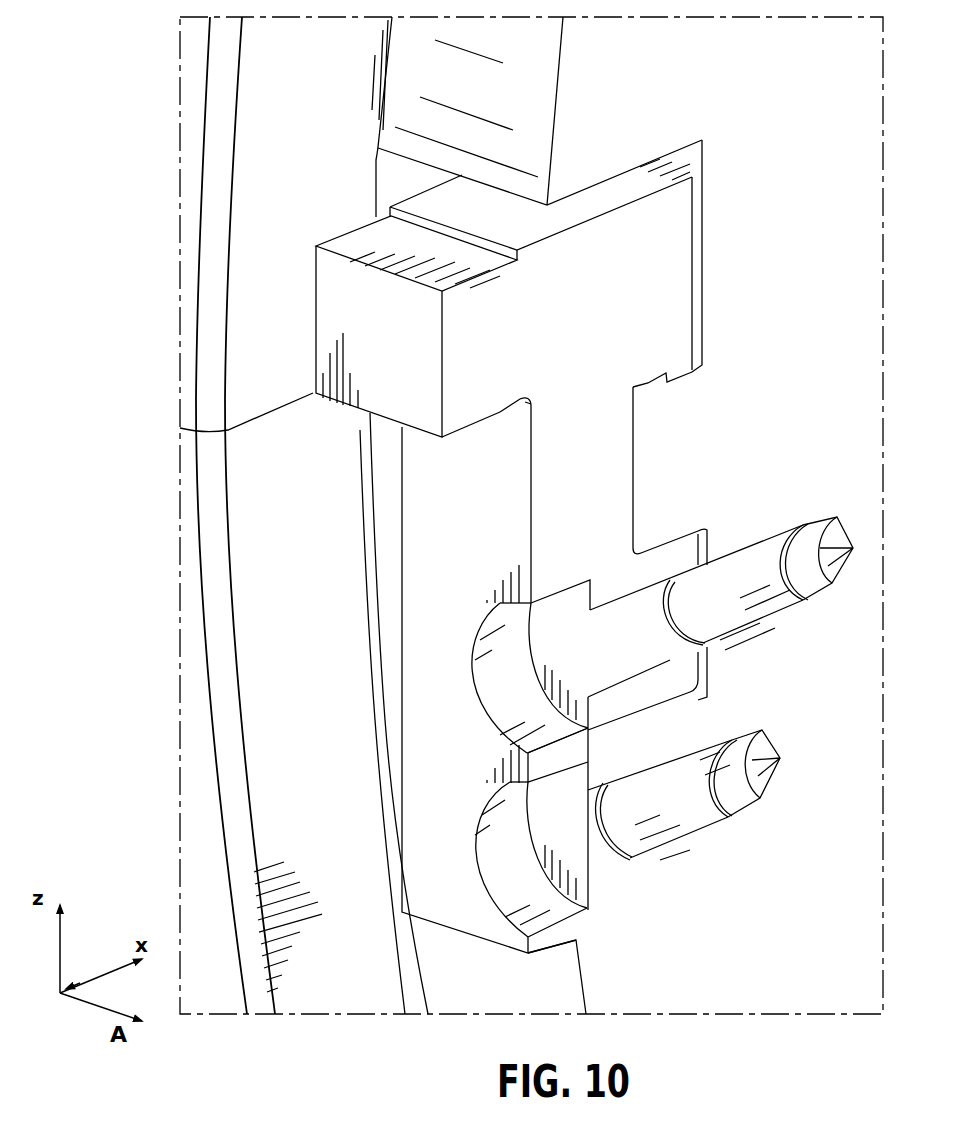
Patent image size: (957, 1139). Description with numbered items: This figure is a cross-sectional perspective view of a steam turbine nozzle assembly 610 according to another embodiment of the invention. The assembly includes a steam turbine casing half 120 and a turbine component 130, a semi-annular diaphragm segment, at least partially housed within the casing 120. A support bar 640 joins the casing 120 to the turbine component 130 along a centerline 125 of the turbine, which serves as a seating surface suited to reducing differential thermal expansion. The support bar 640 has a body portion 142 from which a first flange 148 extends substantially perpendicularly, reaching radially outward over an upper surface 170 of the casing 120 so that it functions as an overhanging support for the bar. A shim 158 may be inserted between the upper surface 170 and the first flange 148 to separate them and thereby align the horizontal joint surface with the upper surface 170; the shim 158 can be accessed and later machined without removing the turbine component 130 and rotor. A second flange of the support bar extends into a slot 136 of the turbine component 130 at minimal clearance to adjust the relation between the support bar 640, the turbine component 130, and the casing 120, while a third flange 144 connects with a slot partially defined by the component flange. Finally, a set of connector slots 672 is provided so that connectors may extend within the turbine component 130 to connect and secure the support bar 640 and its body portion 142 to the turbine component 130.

The steam turbine nozzle assembly 610 is at (213, 136).
The steam turbine casing half 120 is at (288, 283).
The centerline 125 is at (263, 413).
The turbine component 130 is at (845, 83).
The slot 136 is at (710, 304).
The first flange 148 is at (505, 375).
The shim 158 is at (652, 384).
The support bar 640 is at (602, 390).
The body portion 142 is at (602, 505).
The third flange 144 is at (677, 705).
The upper surface 170 is at (462, 828).
The connector slots 672 is at (758, 595).